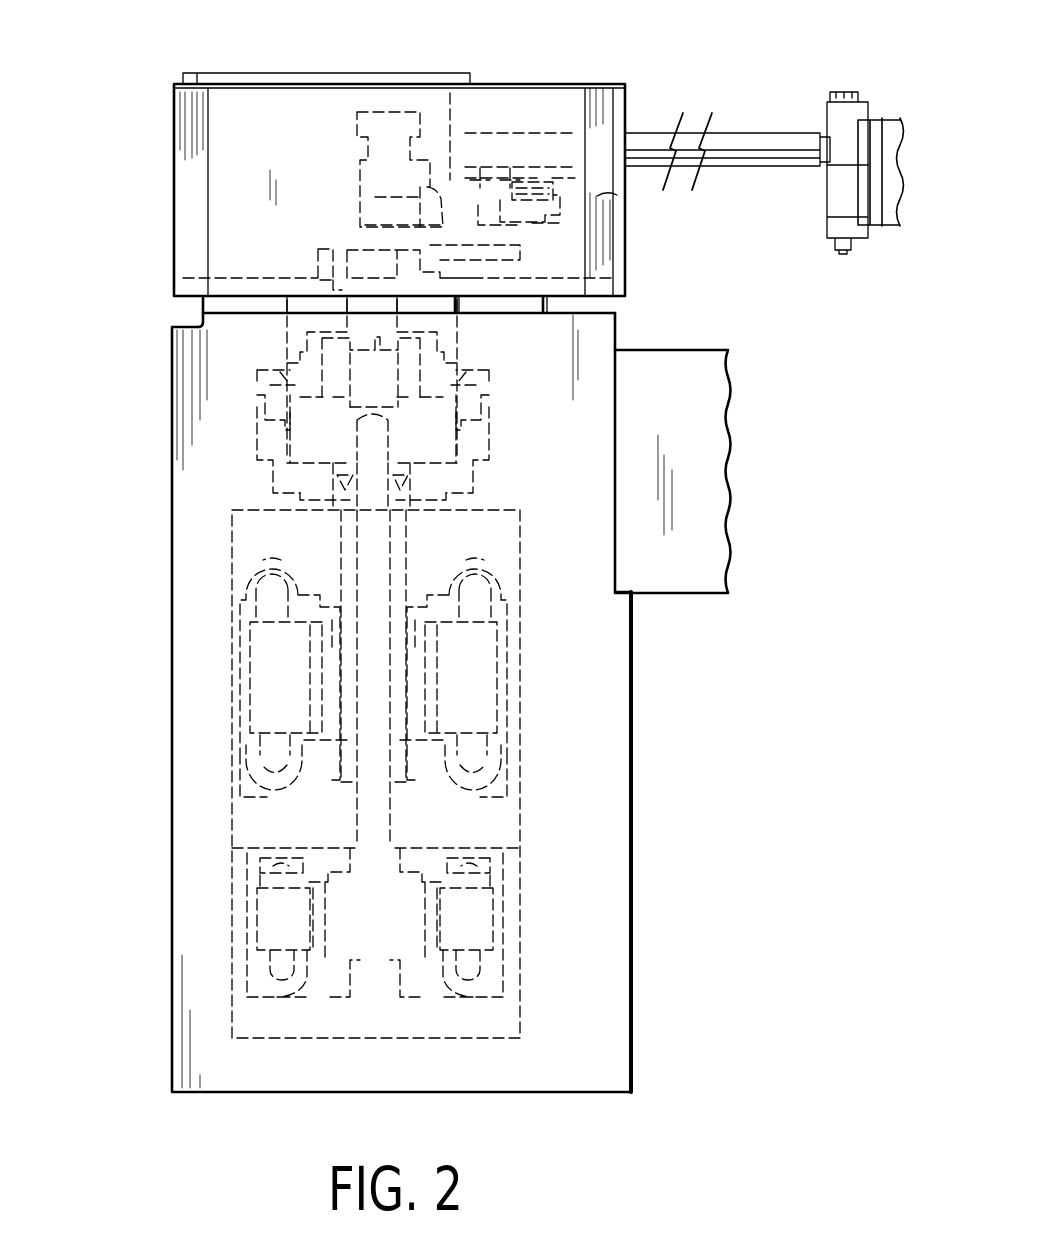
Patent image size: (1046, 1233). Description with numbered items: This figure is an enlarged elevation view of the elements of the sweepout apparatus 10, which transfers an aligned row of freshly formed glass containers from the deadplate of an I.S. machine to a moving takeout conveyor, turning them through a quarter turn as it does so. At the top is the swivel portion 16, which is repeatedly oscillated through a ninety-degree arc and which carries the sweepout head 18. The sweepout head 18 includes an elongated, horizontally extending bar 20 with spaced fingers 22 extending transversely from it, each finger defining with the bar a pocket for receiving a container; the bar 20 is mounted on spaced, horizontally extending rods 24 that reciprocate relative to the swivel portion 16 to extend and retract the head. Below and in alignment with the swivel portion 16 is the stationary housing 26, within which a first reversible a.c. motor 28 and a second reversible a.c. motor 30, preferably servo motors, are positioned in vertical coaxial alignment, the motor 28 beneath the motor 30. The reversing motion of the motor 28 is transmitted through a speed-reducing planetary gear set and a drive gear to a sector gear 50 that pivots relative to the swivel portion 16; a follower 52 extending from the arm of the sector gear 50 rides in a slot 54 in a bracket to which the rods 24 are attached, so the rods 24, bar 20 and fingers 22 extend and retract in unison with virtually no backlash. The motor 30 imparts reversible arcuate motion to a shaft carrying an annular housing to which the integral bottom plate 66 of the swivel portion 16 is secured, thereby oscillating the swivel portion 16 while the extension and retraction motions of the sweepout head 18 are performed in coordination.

The sweepout apparatus 10 is at (152, 374).
The swivel portion 16 is at (173, 222).
The sweepout head 18 is at (840, 120).
The bar 20 is at (820, 186).
The fingers 22 is at (883, 118).
The rods 24 is at (753, 140).
The stationary housing 26 is at (633, 760).
The first reversible a.c. motor 28 is at (507, 940).
The second reversible a.c. motor 30 is at (500, 722).
The sector gear 50 is at (547, 237).
The follower 52 is at (552, 170).
The slot 54 is at (630, 205).
The bottom plate 66 is at (615, 300).